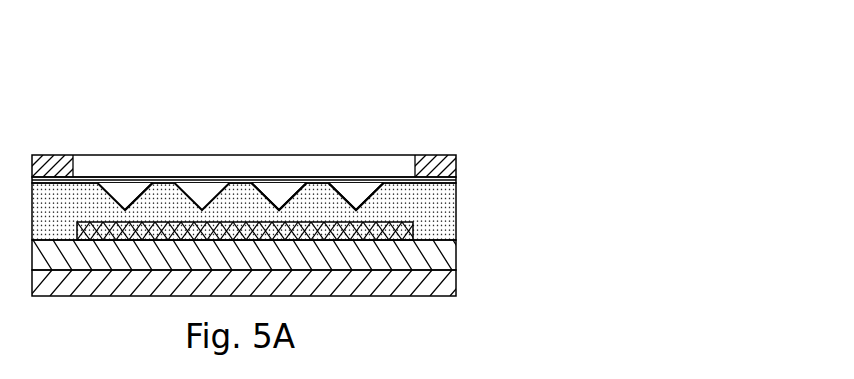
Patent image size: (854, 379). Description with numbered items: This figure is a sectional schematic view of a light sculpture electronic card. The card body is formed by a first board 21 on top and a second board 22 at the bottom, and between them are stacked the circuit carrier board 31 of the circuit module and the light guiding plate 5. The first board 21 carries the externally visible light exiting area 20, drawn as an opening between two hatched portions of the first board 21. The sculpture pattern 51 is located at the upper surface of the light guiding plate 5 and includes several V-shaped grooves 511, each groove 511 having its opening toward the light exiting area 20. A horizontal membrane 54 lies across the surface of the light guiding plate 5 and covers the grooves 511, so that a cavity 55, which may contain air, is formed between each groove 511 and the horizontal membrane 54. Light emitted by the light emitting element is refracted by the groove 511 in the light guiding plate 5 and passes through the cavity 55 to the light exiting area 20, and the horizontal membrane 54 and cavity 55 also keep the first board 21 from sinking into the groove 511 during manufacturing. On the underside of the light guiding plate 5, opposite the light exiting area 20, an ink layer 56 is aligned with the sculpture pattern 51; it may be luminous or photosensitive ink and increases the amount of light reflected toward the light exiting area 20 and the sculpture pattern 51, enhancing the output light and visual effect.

The light guiding plate 5 is at (448, 210).
The light exiting area 20 is at (165, 167).
The first board 21 is at (452, 164).
The second board 22 is at (446, 283).
The circuit carrier board 31 is at (443, 257).
The sculpture pattern 51 is at (195, 197).
The groove 511 is at (138, 199).
The horizontal membrane 54 is at (402, 180).
The cavity 55 is at (278, 197).
The ink layer 56 is at (317, 228).